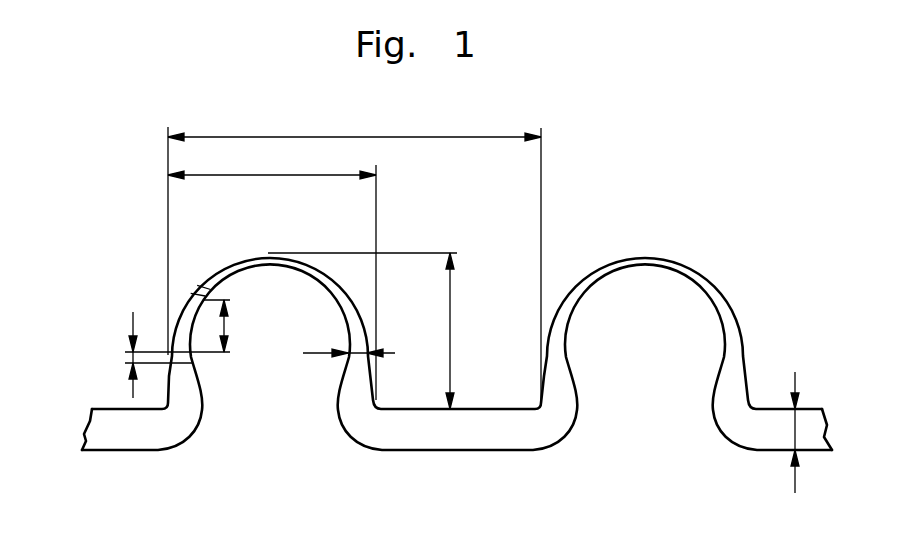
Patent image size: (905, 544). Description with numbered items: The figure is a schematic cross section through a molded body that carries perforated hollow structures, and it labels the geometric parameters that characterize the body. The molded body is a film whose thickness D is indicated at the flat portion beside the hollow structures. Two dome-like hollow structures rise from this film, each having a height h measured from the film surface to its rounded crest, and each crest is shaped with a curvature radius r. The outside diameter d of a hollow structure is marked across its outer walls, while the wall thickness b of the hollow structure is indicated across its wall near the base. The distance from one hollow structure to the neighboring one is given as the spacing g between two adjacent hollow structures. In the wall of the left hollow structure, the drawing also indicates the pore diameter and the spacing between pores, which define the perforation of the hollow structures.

The spacing between two adjacent hollow structures g is at (354, 256).
The outside diameter of the hollow structure d is at (272, 274).
The height of the hollow structure h is at (369, 331).
The wall thickness of the hollow structure b is at (349, 341).
The thickness of the film D is at (803, 436).
The curvature radius for the hollow structure r is at (588, 290).